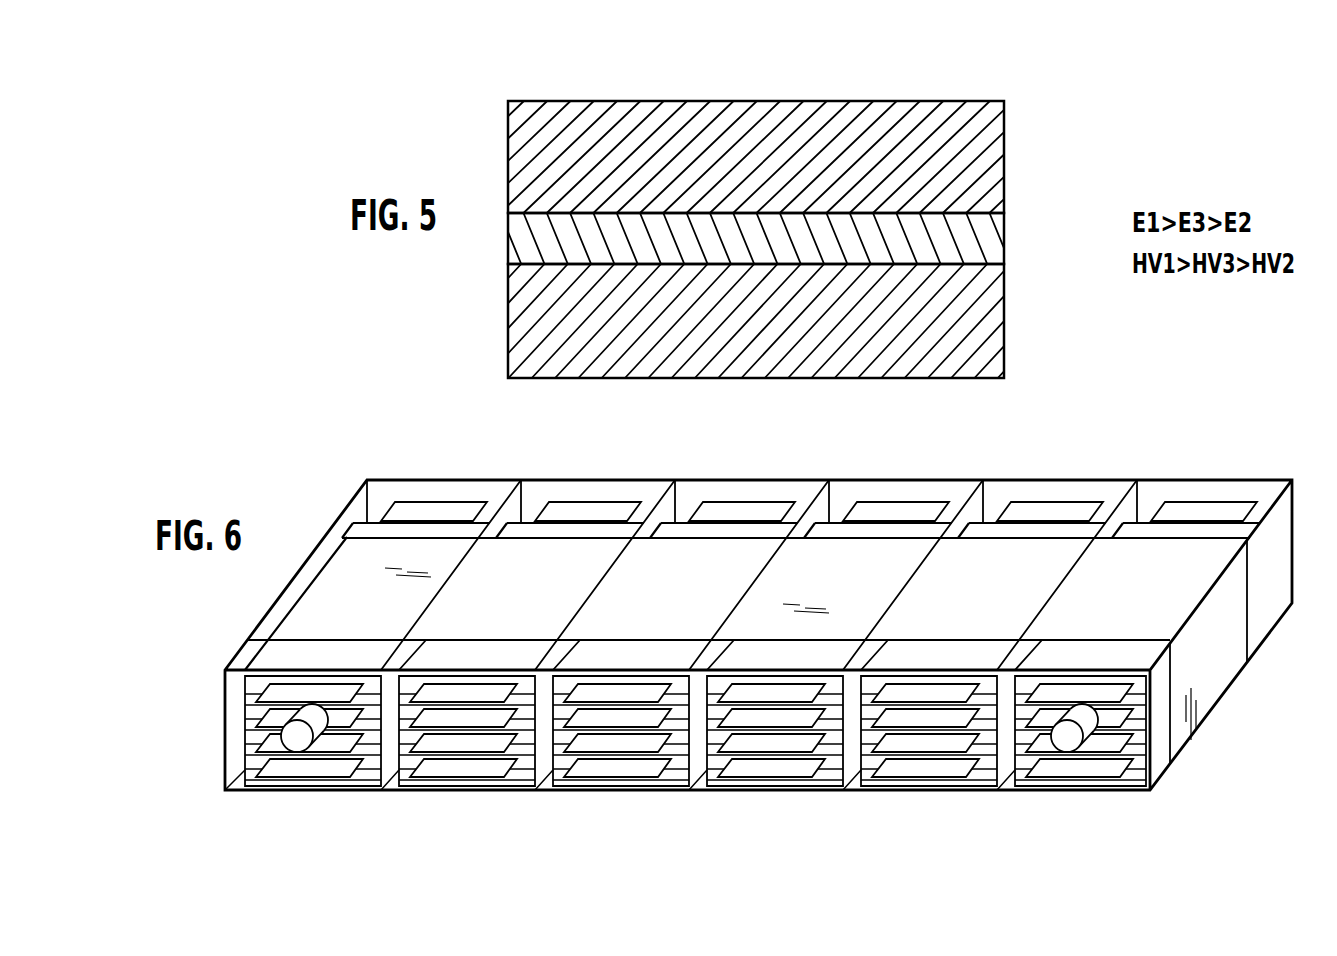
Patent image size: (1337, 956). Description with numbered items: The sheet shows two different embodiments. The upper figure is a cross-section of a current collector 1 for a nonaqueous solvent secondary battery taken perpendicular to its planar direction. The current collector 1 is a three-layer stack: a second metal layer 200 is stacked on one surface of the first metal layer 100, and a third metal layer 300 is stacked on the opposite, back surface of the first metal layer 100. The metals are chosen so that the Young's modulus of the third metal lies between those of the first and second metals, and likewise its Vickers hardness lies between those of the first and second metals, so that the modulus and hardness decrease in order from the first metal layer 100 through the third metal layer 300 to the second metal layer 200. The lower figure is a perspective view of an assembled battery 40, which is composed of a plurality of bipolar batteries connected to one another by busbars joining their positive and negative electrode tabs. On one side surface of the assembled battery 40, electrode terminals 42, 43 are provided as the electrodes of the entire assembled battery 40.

In FIG. 5, the current collector 1 is at (558, 66).
In FIG. 5, the third metal layer 300 is at (1004, 133).
In FIG. 5, the first metal layer 100 is at (1004, 237).
In FIG. 5, the second metal layer 200 is at (1004, 303).
In FIG. 6, the assembled battery 40 is at (322, 456).
In FIG. 6, the electrode terminal 42 is at (297, 742).
In FIG. 6, the electrode terminal 43 is at (1067, 742).